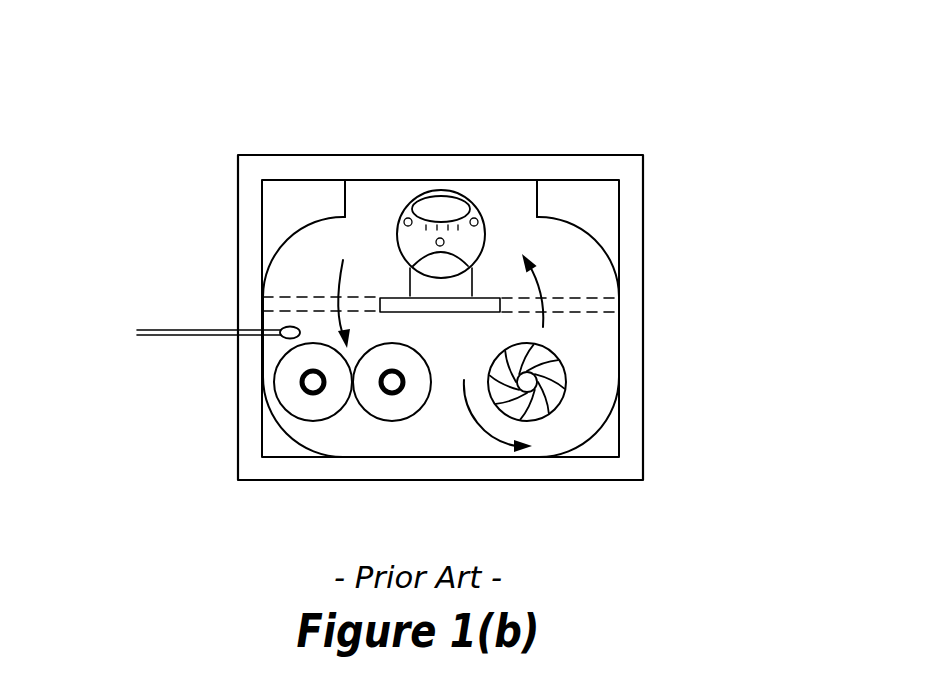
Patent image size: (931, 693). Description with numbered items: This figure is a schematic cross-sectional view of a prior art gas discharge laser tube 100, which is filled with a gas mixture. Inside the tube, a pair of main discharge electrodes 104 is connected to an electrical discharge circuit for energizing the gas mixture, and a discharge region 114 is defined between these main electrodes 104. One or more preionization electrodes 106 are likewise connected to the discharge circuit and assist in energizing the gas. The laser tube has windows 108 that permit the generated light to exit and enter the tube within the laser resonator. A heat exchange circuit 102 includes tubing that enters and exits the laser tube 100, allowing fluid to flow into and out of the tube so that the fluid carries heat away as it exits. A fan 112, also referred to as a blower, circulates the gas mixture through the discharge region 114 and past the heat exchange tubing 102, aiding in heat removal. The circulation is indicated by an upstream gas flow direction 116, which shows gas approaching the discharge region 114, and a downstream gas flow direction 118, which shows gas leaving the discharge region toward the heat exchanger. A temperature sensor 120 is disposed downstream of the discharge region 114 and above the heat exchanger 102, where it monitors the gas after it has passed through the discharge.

The gas discharge laser tube 100 is at (652, 127).
The heat exchange circuit 102 is at (312, 396).
The main discharge electrodes 104 is at (437, 175).
The preionization electrodes 106 is at (404, 219).
The windows 108 is at (397, 231).
The fan 112 is at (545, 421).
The discharge region 114 is at (407, 208).
The upstream gas flow direction 116 is at (540, 290).
The downstream gas flow direction 118 is at (332, 277).
The temperature sensor 120 is at (191, 333).